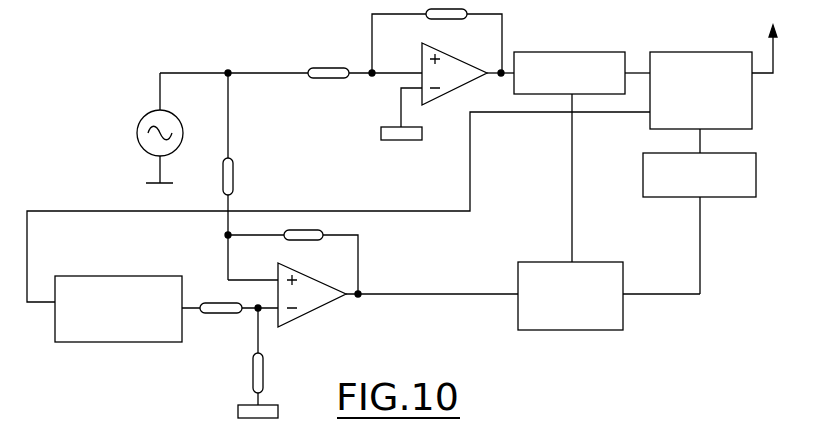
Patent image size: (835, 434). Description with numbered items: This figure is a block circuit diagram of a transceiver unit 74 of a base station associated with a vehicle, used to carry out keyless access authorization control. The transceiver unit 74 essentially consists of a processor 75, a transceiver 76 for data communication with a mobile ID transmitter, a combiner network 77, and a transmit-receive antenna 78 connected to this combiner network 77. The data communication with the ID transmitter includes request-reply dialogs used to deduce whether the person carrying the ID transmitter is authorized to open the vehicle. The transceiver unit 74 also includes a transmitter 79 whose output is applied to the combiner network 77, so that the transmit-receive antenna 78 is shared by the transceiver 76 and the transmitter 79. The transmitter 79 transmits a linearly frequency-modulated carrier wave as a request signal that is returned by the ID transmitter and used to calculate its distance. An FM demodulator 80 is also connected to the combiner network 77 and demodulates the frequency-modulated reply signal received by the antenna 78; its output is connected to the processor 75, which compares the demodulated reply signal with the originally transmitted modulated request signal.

The transceiver unit 74 is at (437, 318).
The processor 75 is at (590, 330).
The transceiver 76 is at (757, 173).
The combiner network 77 is at (673, 52).
The transmit-receive antenna 78 is at (764, 83).
The transmitter 79 is at (575, 52).
The FM demodulator 80 is at (108, 276).